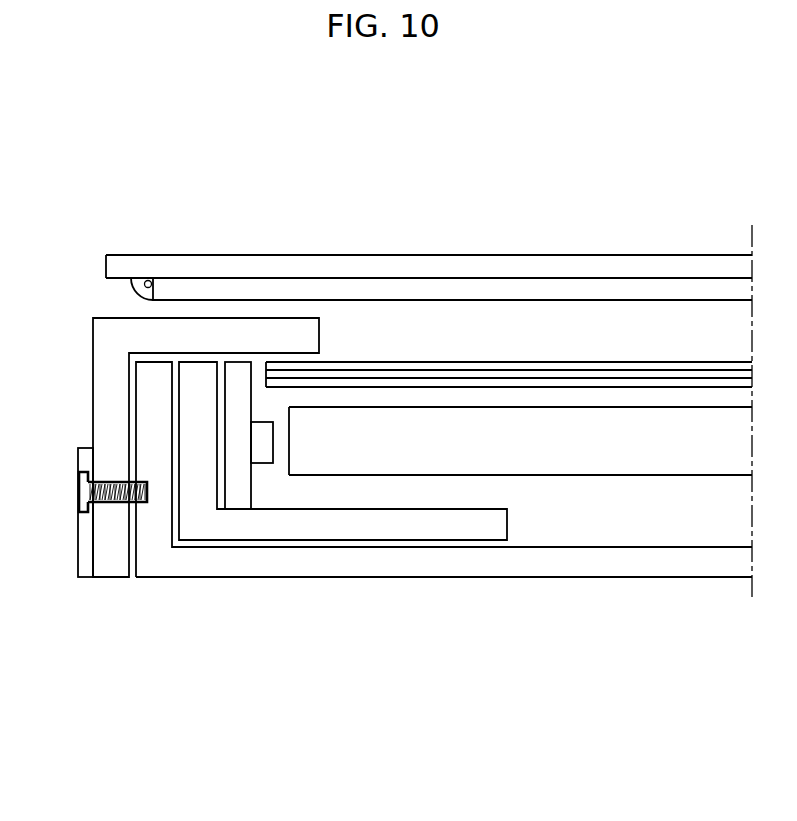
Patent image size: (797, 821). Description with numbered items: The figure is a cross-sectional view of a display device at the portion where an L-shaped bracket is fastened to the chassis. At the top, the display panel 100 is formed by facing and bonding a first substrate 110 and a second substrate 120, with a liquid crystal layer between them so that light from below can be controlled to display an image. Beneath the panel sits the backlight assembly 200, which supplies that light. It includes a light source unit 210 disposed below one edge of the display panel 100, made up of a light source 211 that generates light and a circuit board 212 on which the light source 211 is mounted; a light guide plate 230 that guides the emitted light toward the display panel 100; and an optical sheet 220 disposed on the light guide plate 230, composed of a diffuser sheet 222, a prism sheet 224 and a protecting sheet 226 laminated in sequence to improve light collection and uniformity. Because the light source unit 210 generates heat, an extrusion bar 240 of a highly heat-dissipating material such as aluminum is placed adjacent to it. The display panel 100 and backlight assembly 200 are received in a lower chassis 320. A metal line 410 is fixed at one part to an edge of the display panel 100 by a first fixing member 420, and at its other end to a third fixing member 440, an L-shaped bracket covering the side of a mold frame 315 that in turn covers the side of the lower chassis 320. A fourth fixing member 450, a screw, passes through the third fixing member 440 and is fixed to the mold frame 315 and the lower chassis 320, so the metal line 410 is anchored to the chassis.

The display panel 100 is at (429, 230).
The first substrate 110 is at (305, 204).
The second substrate 120 is at (323, 262).
The backlight assembly 200 is at (465, 447).
The light source unit 210 is at (293, 520).
The light source 211 is at (262, 464).
The circuit board 212 is at (240, 500).
The optical sheet 220 is at (509, 274).
The diffuser sheet 222 is at (647, 383).
The prism sheet 224 is at (597, 377).
The protecting sheet 226 is at (520, 367).
The light guide plate 230 is at (450, 440).
The extrusion bar 240 is at (425, 525).
The mold frame 315 is at (107, 415).
The lower chassis 320 is at (497, 565).
The metal line 410 is at (148, 280).
The first fixing member 420 is at (130, 282).
The third fixing member 440 is at (80, 538).
The fourth fixing member 450 is at (82, 492).